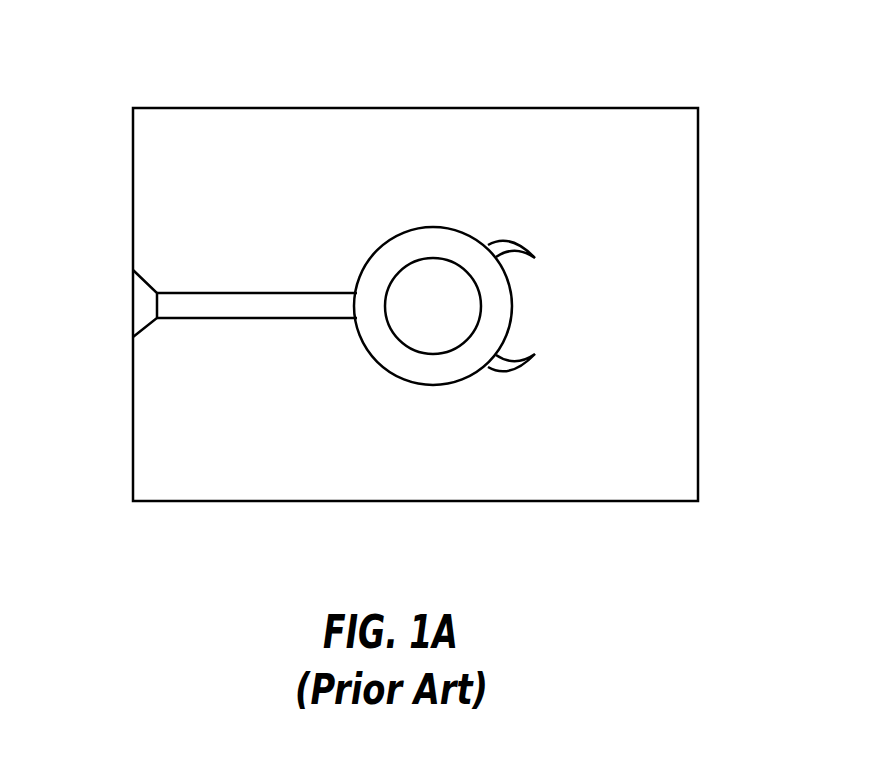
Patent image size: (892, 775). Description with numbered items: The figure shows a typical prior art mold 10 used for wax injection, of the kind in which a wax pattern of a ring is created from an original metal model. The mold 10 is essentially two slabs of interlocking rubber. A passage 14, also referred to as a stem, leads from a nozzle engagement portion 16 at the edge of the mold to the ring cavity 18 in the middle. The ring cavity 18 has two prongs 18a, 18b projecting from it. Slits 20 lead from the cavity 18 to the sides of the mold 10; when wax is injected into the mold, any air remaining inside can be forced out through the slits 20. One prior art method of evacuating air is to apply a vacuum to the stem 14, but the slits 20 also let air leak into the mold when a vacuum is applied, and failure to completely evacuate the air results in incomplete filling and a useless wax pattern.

The mold 10 is at (678, 53).
The passage 14 is at (232, 322).
The nozzle engagement portion 16 is at (143, 310).
The ring cavity 18 is at (383, 253).
The prong 18a is at (513, 237).
The prong 18b is at (513, 375).
The slits 20 is at (300, 449).